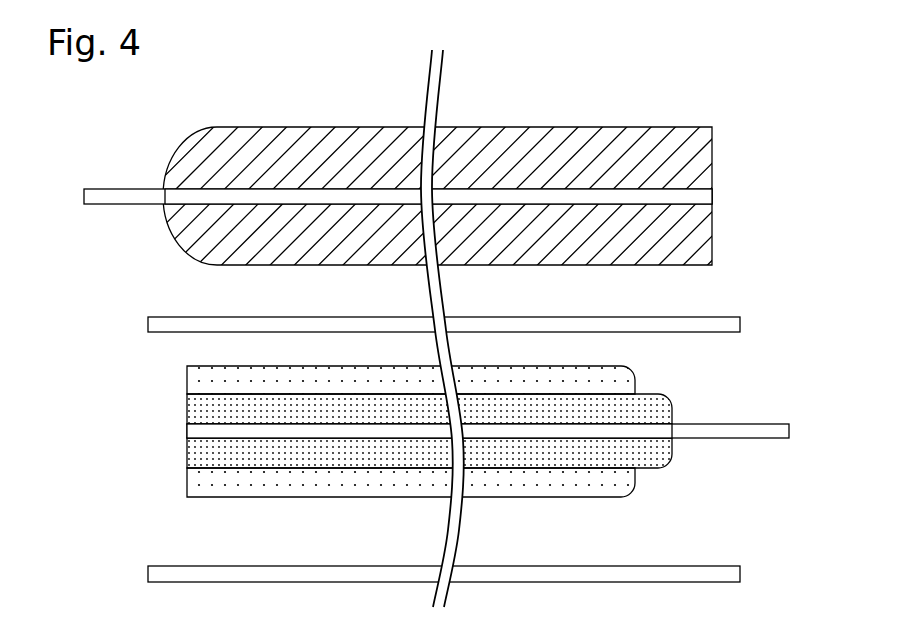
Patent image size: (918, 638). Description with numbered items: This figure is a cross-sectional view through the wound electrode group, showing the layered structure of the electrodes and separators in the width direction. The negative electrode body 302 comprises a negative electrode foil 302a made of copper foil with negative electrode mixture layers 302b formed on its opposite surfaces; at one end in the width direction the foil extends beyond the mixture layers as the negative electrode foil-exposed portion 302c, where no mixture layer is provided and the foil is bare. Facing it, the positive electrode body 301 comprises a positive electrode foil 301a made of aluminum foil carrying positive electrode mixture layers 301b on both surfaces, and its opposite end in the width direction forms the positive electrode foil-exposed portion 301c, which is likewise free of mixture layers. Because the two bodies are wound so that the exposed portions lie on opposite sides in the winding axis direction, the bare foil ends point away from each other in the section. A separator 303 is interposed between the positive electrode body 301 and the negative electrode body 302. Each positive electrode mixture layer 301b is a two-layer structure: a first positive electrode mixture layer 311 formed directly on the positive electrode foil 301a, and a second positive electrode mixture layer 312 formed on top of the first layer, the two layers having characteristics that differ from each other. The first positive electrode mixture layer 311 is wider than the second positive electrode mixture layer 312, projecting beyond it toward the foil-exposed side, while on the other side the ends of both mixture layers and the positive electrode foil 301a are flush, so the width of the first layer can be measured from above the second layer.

The positive electrode body 301 is at (442, 460).
The positive electrode foil 301a is at (390, 432).
The positive electrode mixture layer 301b is at (361, 431).
The positive electrode foil-exposed portion 301c is at (742, 440).
The negative electrode body 302 is at (426, 150).
The negative electrode foil 302a is at (581, 194).
The negative electrode mixture layer 302b is at (703, 160).
The negative electrode foil-exposed portion 302c is at (117, 188).
The separator 303 is at (728, 323).
The first positive electrode mixture layer 311 is at (205, 407).
The second positive electrode mixture layer 312 is at (205, 381).